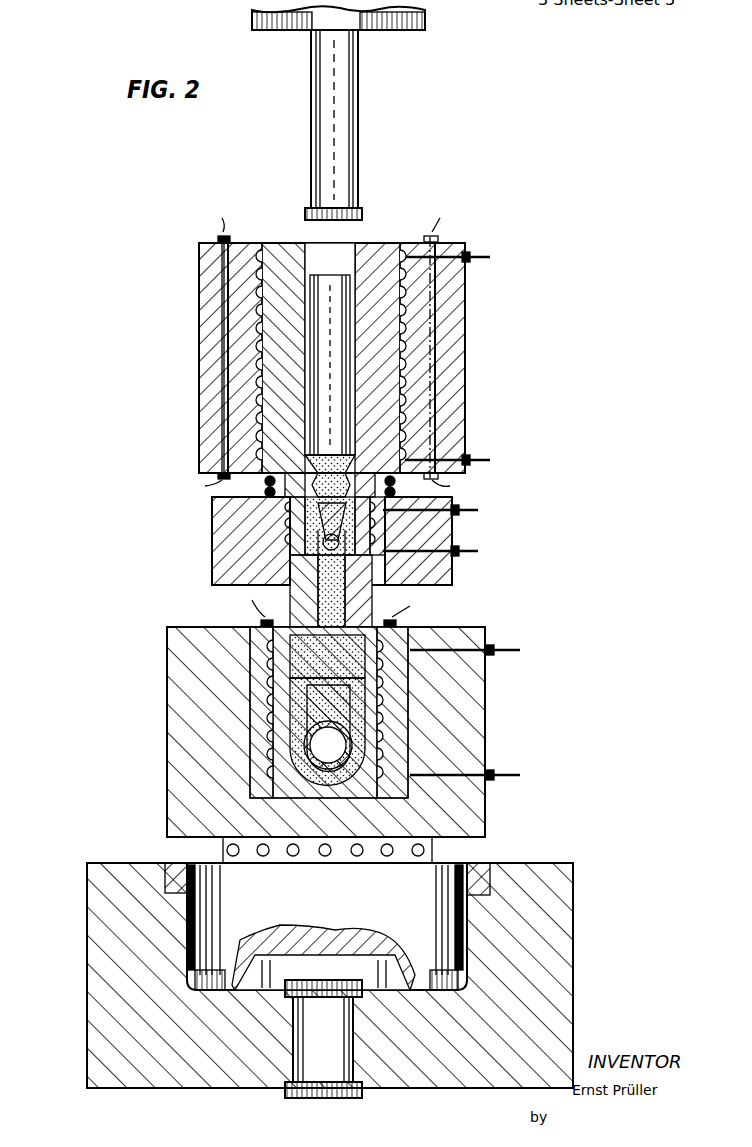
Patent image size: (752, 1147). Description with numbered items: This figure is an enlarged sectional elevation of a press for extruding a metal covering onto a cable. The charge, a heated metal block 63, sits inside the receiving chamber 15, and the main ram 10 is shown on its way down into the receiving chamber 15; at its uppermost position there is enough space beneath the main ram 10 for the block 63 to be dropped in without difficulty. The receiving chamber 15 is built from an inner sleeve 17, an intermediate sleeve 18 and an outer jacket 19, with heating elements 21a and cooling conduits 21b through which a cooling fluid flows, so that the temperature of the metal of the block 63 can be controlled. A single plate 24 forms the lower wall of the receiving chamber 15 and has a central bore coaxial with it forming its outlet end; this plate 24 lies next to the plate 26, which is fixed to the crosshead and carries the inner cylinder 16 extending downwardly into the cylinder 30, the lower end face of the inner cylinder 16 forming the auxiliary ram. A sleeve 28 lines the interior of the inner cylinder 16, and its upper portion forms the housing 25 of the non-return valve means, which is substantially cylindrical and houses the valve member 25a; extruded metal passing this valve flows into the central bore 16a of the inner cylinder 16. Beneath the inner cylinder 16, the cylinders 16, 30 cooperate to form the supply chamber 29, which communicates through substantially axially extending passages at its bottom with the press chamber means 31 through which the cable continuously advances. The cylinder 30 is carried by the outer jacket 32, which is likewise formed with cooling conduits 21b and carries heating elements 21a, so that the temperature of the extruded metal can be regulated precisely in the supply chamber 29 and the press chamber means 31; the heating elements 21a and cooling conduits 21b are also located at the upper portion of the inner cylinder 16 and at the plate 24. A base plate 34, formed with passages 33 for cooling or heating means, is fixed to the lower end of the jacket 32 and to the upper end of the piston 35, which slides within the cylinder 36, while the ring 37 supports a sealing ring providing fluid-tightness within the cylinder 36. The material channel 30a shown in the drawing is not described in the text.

The main ram 10 is at (322, 124).
The receiving chamber 15 is at (325, 238).
The inner cylinder 16 is at (298, 601).
The central bore 16a is at (336, 600).
The inner sleeve 17 is at (300, 243).
The intermediate sleeve 18 is at (386, 243).
The outer jacket 19 is at (212, 283).
The heating elements 21a is at (222, 360).
The cooling conduits 21b is at (258, 411).
The plate 24 is at (292, 512).
The housing of the non-return valve means 25 is at (360, 505).
The valve member 25a is at (340, 535).
The plate 26 is at (215, 568).
The sleeve 28 is at (385, 628).
The supply chamber 29 is at (298, 660).
The cylinder 30 is at (258, 720).
The material channel 30a is at (362, 714).
The press chamber means 31 is at (336, 758).
The outer jacket 32 is at (182, 757).
The passages 33 is at (295, 860).
The base plate 34 is at (372, 862).
The piston 35 is at (455, 882).
The cylinder 36 is at (175, 880).
The ring 37 is at (487, 880).
The heated metal block 63 is at (320, 304).